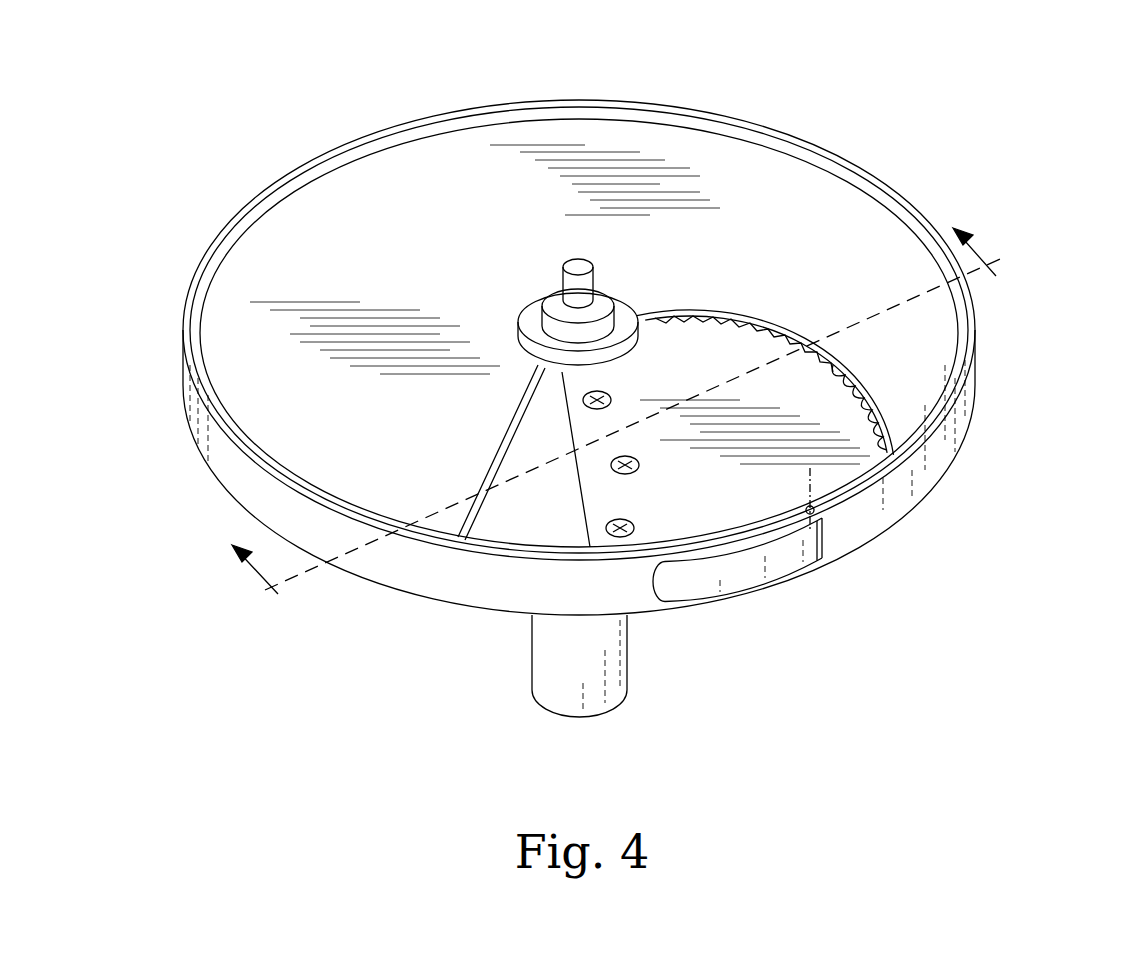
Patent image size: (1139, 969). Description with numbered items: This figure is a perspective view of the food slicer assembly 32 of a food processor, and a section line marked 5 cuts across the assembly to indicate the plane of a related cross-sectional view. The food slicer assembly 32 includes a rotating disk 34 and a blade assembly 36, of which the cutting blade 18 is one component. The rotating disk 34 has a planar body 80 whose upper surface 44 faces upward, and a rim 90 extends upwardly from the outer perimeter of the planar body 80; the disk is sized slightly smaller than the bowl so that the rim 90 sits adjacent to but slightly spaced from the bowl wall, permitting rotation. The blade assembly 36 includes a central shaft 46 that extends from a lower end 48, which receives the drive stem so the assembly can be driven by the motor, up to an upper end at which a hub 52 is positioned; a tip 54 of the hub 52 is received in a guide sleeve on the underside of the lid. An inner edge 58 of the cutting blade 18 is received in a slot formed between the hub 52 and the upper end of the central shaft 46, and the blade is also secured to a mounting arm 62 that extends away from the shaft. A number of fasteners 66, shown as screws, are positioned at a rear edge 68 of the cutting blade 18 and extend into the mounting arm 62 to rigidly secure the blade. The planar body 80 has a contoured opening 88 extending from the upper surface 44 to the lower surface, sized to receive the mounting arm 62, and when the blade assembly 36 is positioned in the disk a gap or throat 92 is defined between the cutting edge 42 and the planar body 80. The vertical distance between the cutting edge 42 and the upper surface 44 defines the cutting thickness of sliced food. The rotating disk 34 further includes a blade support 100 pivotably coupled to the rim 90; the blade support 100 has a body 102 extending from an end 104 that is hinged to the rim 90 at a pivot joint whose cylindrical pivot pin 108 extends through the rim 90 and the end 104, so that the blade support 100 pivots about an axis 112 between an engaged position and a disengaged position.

The cutting blade 18 is at (718, 332).
The food slicer assembly 32 is at (1040, 136).
The rotating disk 34 is at (887, 147).
The blade assembly 36 is at (472, 266).
The cutting edge 42 is at (765, 338).
The upper surface 44 is at (948, 330).
The central shaft 46 is at (612, 663).
The lower end 48 is at (596, 716).
The hub 52 is at (618, 310).
The tip 54 is at (585, 262).
The inner edge 58 is at (640, 330).
The mounting arm 62 is at (500, 532).
The fasteners 66 is at (612, 398).
The rear edge 68 is at (592, 526).
The planar body 80 is at (760, 165).
The contoured opening 88 is at (885, 450).
The rim 90 is at (908, 204).
The throat 92 is at (884, 438).
The blade support 100 is at (753, 578).
The body 102 is at (705, 585).
The end 104 is at (815, 556).
The pivot pin 108 is at (826, 532).
The axis 112 is at (806, 480).
The section line 5- 5 is at (606, 399).